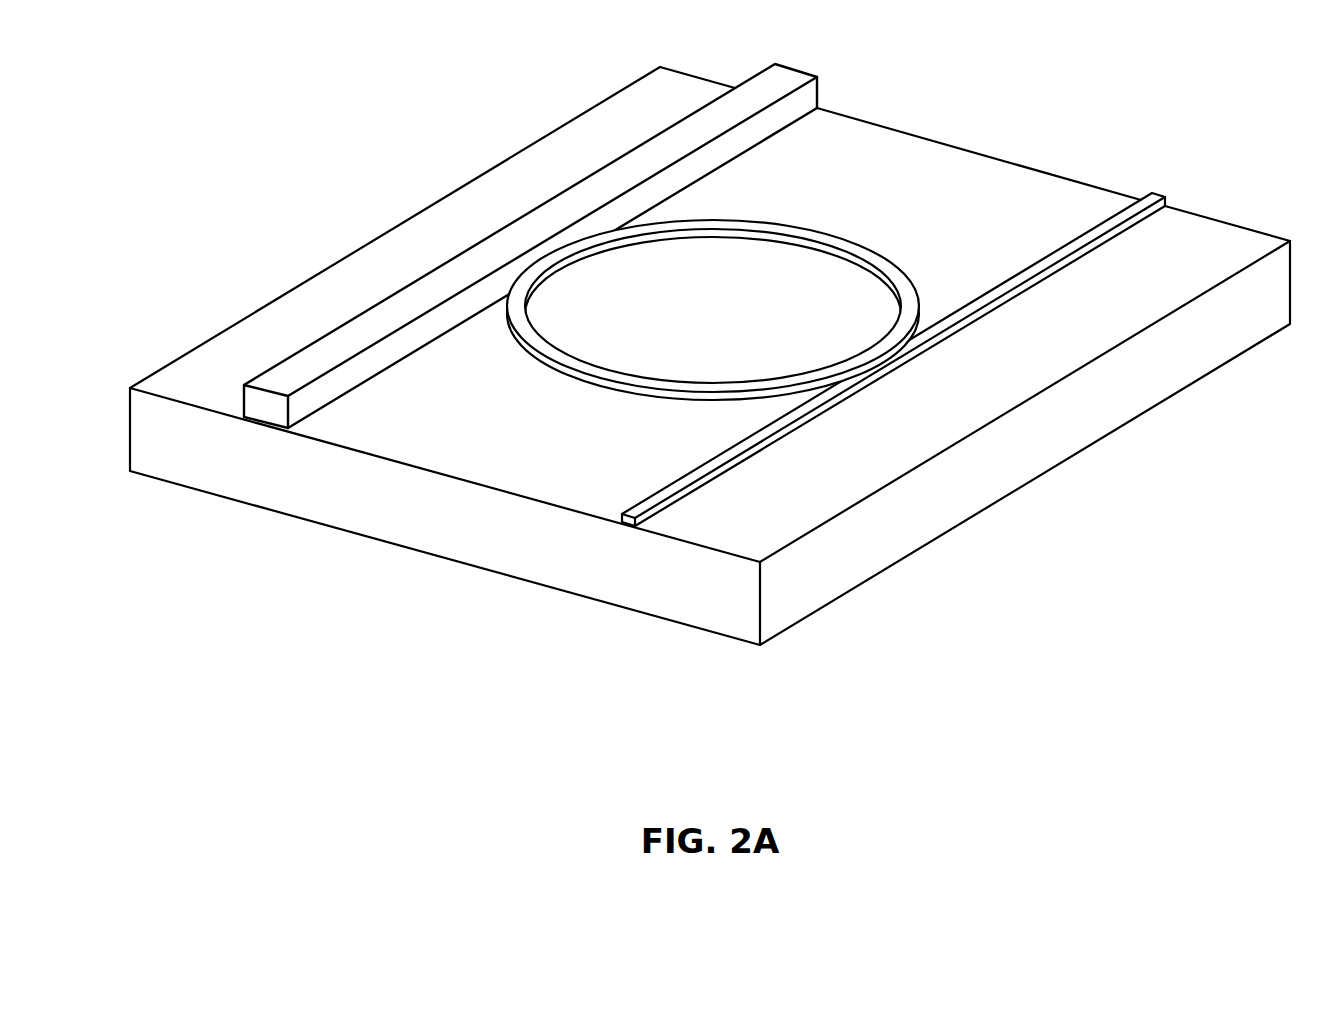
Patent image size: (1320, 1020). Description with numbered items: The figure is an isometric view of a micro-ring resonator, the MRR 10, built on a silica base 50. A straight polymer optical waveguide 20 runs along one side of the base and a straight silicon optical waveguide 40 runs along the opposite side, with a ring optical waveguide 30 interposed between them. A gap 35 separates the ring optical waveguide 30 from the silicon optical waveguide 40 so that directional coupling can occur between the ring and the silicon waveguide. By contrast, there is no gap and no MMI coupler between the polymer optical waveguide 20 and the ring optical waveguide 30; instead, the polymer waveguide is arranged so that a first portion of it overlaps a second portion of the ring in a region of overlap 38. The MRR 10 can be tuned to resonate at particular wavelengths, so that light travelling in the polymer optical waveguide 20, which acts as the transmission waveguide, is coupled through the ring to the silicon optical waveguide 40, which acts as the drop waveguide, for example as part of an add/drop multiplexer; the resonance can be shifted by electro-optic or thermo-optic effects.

The MRR 10 is at (252, 261).
The polymer optical waveguide 20 is at (430, 272).
The ring optical waveguide 30 is at (845, 237).
The gap 35 is at (880, 352).
The region of overlap 38 is at (560, 257).
The silicon optical waveguide 40 is at (1127, 210).
The silica base 50 is at (1082, 368).